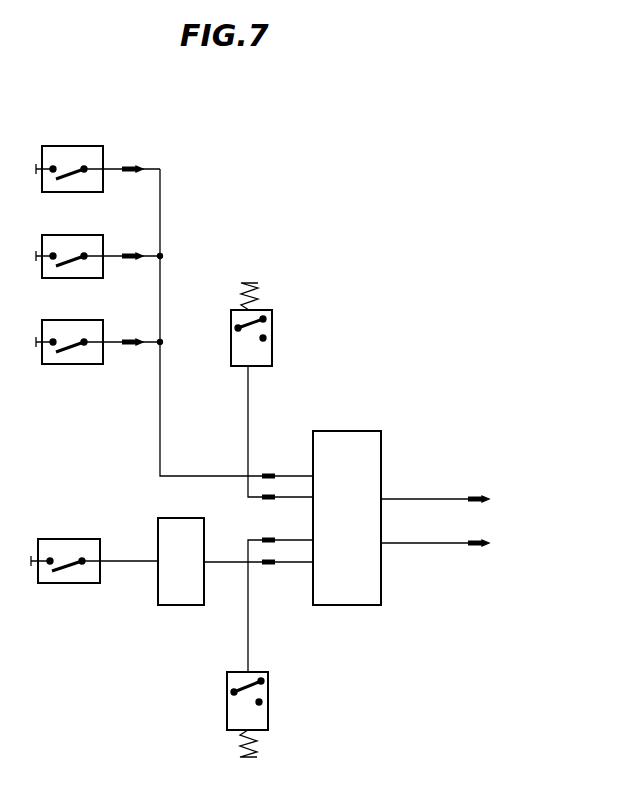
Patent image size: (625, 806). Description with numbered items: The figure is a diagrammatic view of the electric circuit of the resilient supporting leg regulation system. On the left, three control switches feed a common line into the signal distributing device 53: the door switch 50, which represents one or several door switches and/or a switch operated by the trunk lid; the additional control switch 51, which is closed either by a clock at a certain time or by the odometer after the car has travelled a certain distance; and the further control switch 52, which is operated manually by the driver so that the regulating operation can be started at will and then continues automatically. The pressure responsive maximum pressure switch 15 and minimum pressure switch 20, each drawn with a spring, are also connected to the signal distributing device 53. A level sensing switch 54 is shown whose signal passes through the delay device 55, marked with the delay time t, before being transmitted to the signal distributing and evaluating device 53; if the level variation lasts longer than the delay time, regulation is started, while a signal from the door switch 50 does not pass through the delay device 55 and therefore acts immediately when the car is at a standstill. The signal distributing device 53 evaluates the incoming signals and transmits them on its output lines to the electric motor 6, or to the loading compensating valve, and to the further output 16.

The switch 50 is at (72, 150).
The switch 51 is at (72, 239).
The switch 52 is at (72, 324).
The switch 54 is at (68, 533).
The timer 55 is at (178, 607).
The spring-loaded switch 15 is at (272, 330).
The spring-loaded switch 20 is at (228, 706).
The control unit 53 is at (347, 432).
The output line 16 is at (450, 544).
The output line to elements 6 and 17 6 is at (462, 501).